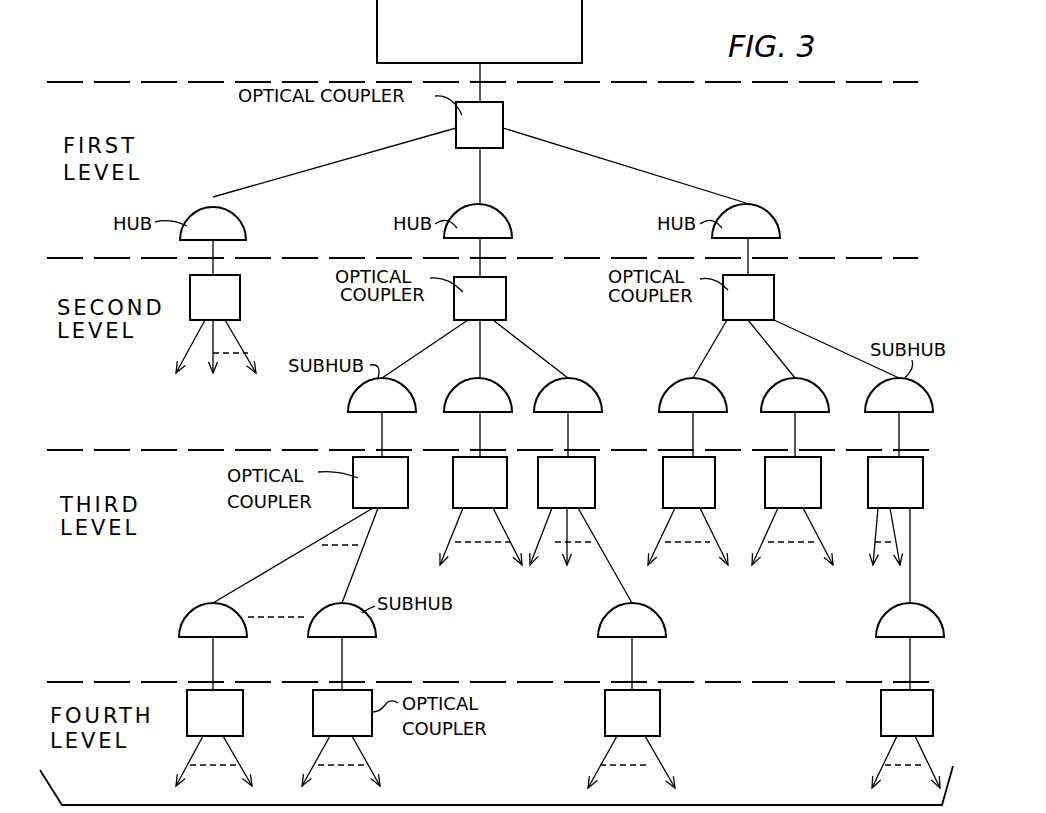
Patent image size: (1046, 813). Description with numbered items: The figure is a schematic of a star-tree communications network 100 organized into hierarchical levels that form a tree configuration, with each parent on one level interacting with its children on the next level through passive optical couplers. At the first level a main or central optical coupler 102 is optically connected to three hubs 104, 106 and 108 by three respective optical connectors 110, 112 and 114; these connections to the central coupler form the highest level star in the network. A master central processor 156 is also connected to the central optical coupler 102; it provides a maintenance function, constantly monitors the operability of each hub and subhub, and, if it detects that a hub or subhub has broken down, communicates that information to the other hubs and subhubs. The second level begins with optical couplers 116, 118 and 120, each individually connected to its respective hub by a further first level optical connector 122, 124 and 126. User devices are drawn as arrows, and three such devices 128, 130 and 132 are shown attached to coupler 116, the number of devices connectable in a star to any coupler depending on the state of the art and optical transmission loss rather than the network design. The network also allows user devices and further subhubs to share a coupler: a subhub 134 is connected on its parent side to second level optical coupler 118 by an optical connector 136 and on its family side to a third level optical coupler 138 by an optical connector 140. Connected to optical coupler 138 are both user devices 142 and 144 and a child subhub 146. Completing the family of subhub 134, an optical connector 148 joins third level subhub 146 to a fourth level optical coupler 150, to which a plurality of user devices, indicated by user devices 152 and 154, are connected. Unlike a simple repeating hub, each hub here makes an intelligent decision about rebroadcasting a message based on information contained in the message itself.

The communications network 100 is at (255, 48).
The central optical coupler 102 is at (503, 112).
The hub 104 is at (237, 206).
The hub 106 is at (513, 222).
The hub 108 is at (768, 213).
The optical connector 110 is at (326, 160).
The optical connector 112 is at (480, 172).
The optical connector 114 is at (643, 163).
The optical coupler 116 is at (240, 290).
The optical coupler 118 is at (506, 298).
The optical coupler 120 is at (774, 296).
The optical connector 122 is at (215, 248).
The optical connector 124 is at (480, 265).
The optical connector 126 is at (748, 247).
The user device 128 is at (185, 348).
The user device 130 is at (208, 348).
The user device 132 is at (228, 333).
The subhub 134 is at (585, 382).
The optical connector 136 is at (538, 350).
The optical coupler 138 is at (595, 478).
The optical connector 140 is at (568, 432).
The user device 142 is at (547, 532).
The user device 144 is at (568, 530).
The child subhub 146 is at (650, 618).
The optical connector 148 is at (633, 657).
The optical coupler 150 is at (660, 706).
The user device 152 is at (607, 756).
The user device 154 is at (655, 752).
The central processor 156 is at (582, 34).